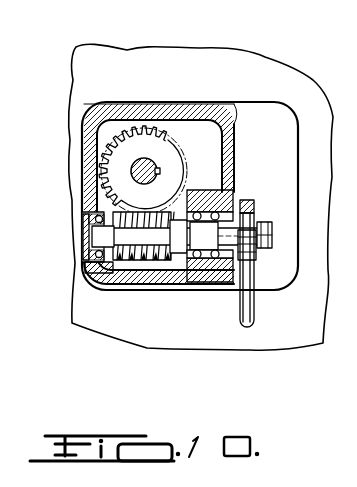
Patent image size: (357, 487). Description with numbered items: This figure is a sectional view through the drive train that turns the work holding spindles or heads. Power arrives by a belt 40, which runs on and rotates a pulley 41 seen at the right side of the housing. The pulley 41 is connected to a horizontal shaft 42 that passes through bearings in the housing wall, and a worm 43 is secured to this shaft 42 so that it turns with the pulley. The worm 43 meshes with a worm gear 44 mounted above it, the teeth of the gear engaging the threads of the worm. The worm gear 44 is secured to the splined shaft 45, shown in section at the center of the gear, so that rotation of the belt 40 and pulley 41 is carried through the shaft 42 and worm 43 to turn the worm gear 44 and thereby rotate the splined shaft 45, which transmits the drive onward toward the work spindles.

The belt 40 is at (272, 307).
The pulley 41 is at (250, 203).
The shaft 42 is at (184, 248).
The worm 43 is at (157, 259).
The worm gear 44 is at (143, 137).
The splined shaft 45 is at (160, 170).